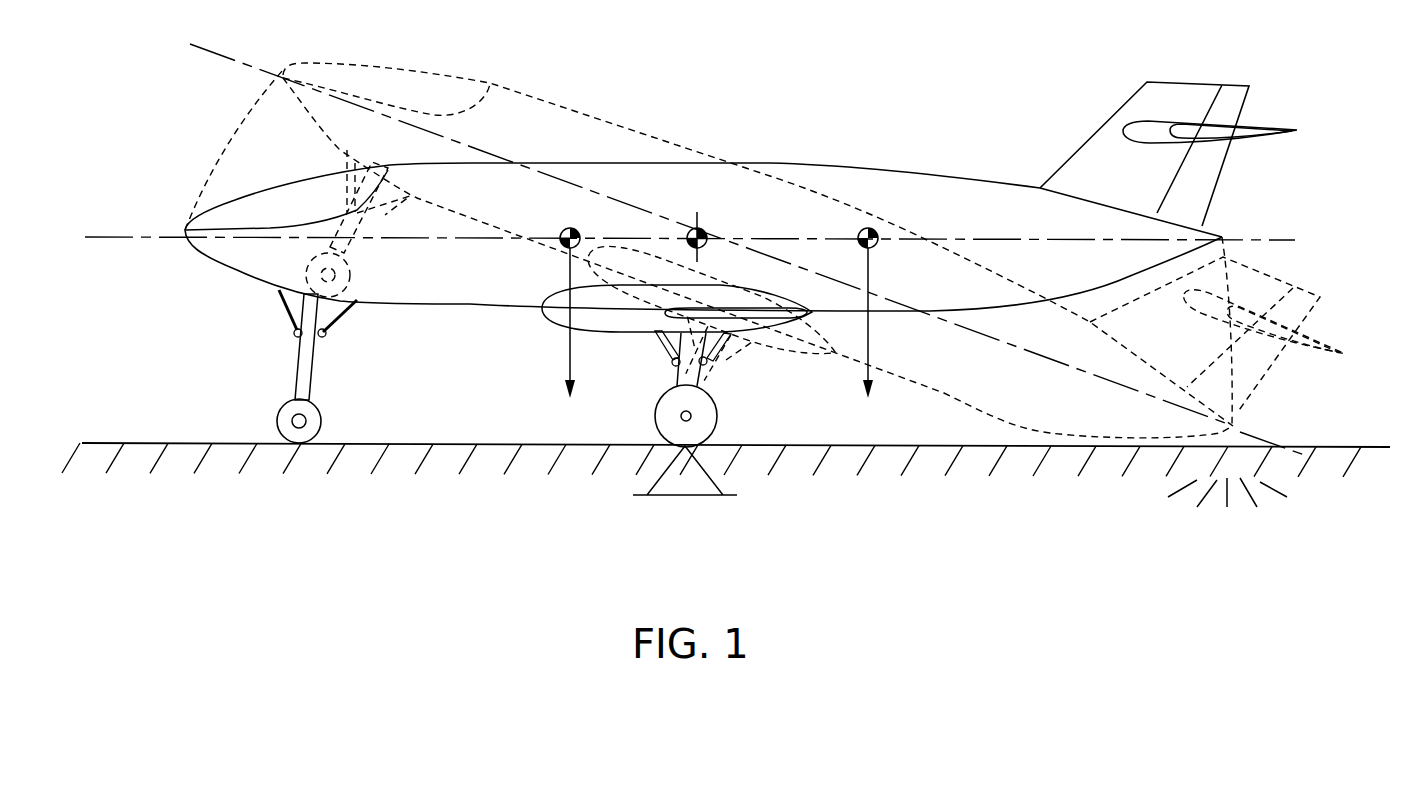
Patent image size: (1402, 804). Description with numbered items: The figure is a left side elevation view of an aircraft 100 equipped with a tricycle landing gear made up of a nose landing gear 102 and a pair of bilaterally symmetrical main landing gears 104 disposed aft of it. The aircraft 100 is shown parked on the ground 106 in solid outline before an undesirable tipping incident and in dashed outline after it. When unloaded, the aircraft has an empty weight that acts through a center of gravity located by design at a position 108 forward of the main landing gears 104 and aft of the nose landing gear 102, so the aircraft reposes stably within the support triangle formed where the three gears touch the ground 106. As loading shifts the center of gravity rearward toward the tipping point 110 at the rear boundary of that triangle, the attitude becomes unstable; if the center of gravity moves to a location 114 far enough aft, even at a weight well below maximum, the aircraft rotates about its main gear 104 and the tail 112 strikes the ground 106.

The aircraft 100 is at (838, 78).
The nose landing gear 102 is at (302, 374).
The main landing gear 104 is at (683, 380).
The ground 106 is at (382, 443).
The unloaded center of gravity position 108 is at (578, 231).
The tipping point 110 is at (703, 231).
The tail 112 is at (1225, 236).
The aft center of gravity location 114 is at (877, 230).